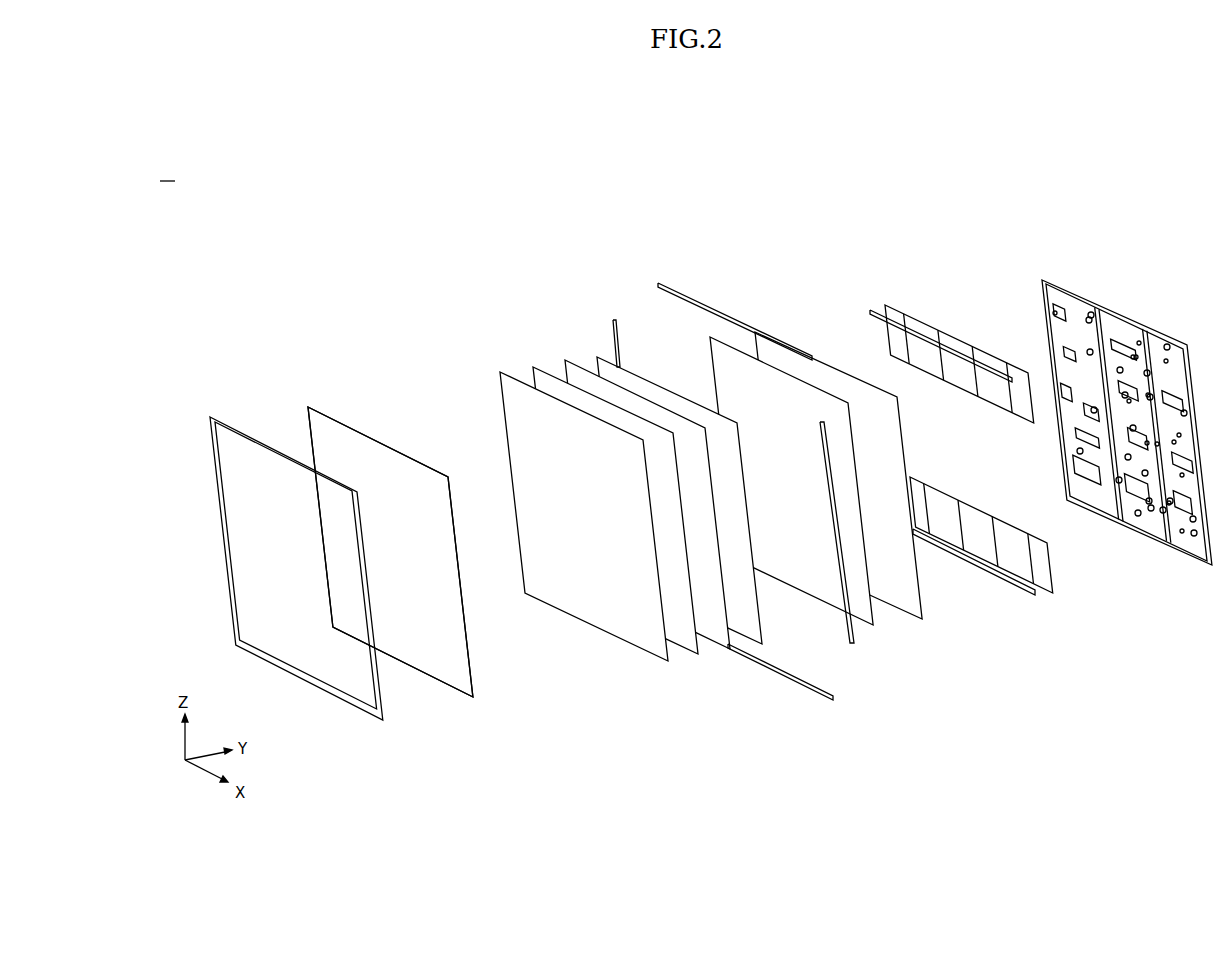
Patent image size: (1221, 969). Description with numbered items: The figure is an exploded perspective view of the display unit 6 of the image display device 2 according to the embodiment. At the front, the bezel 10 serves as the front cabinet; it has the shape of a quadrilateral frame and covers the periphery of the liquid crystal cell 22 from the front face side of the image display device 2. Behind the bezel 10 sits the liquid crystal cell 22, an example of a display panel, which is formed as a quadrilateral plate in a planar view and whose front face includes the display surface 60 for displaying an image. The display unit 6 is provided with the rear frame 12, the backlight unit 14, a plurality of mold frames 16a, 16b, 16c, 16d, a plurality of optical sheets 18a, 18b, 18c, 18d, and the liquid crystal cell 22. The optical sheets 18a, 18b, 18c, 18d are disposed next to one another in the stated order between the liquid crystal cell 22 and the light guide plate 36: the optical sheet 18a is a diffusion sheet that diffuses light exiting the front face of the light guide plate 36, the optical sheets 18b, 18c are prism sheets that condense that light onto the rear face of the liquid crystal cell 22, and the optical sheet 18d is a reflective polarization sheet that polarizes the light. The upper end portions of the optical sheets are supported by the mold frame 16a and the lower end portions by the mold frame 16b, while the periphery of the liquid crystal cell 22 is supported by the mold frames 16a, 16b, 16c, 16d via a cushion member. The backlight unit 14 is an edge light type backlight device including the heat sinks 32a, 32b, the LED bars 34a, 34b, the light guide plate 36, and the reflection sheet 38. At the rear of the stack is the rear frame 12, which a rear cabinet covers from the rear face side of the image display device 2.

The image display device 2 is at (218, 228).
The display unit 6 is at (827, 178).
The bezel 10 is at (255, 432).
The rear frame 12 is at (1135, 322).
The backlight unit 14 is at (879, 247).
The mold frame 16a is at (712, 310).
The mold frame 16b is at (795, 678).
The mold frame 16c is at (855, 640).
The mold frame 16d is at (610, 324).
The optical sheet 18a is at (750, 650).
The optical sheet 18b is at (712, 650).
The optical sheet 18c is at (540, 365).
The optical sheet 18d is at (500, 372).
The liquid crystal cell 22 is at (356, 428).
The heat sink 32a is at (952, 383).
The heat sink 32b is at (1010, 527).
The LED bar 34a is at (952, 340).
The LED bar 34b is at (970, 567).
The light guide plate 36 is at (712, 352).
The reflection sheet 38 is at (804, 348).
The display surface 60 is at (422, 476).